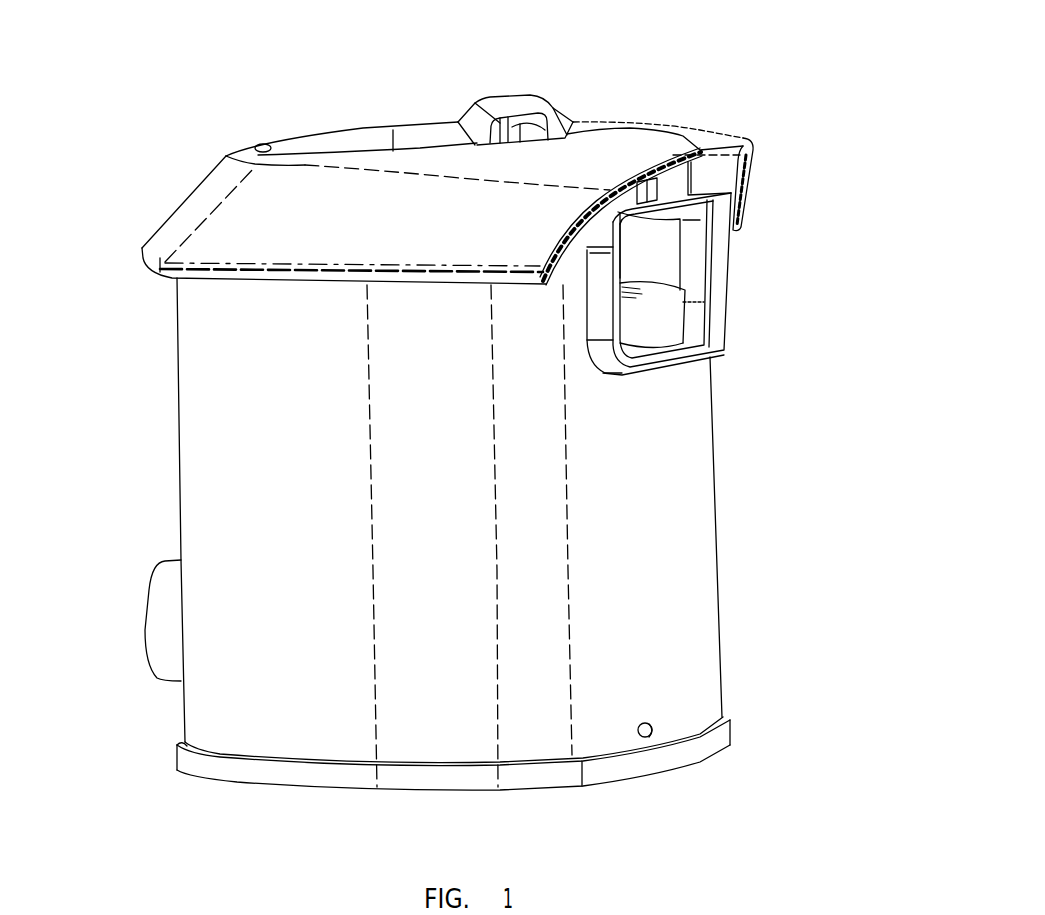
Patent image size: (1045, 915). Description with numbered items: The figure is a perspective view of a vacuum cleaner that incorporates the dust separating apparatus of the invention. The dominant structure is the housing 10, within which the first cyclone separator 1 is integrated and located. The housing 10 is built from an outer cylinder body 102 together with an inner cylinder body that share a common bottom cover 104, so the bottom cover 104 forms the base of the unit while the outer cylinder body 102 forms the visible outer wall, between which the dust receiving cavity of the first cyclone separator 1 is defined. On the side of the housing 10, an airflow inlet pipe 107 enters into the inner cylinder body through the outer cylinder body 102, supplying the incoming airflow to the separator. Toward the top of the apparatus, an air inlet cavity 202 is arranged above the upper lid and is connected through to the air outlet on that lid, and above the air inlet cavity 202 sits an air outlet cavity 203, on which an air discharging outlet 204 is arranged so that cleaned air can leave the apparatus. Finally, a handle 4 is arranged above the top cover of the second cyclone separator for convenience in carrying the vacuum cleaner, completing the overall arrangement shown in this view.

The first cyclone separator 1 is at (680, 542).
The handle 4 is at (433, 110).
The housing 10 is at (247, 490).
The outer cylinder body 102 is at (692, 657).
The bottom cover 104 is at (682, 753).
The airflow inlet pipe 107 is at (170, 617).
The air inlet cavity 202 is at (670, 350).
The air outlet cavity 203 is at (680, 250).
The air discharging outlet 204 is at (700, 302).